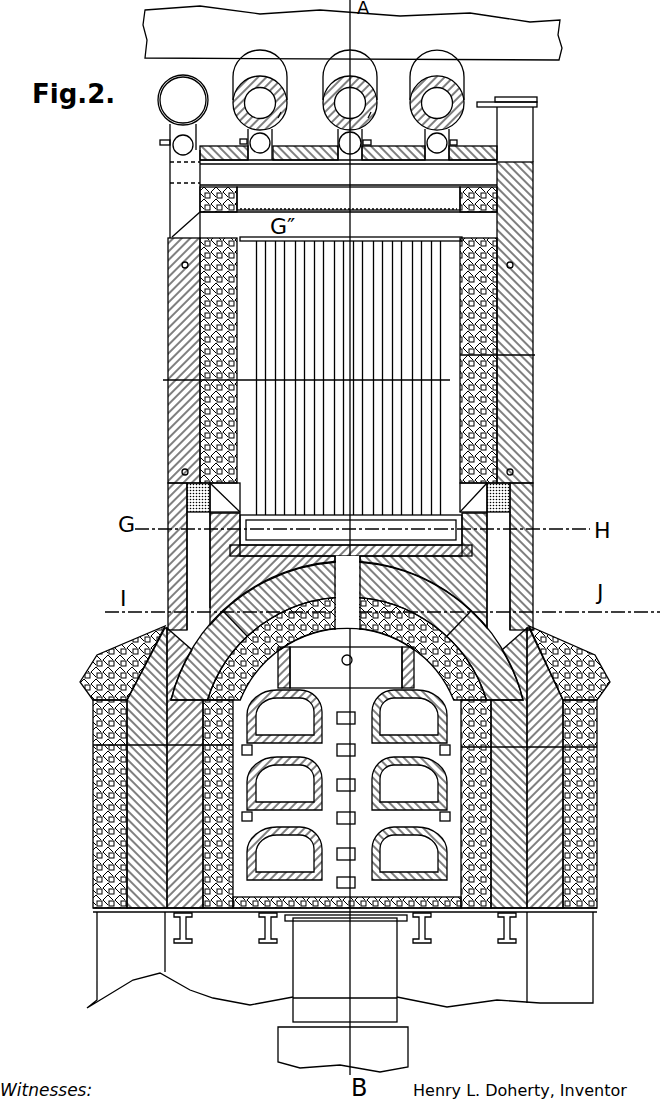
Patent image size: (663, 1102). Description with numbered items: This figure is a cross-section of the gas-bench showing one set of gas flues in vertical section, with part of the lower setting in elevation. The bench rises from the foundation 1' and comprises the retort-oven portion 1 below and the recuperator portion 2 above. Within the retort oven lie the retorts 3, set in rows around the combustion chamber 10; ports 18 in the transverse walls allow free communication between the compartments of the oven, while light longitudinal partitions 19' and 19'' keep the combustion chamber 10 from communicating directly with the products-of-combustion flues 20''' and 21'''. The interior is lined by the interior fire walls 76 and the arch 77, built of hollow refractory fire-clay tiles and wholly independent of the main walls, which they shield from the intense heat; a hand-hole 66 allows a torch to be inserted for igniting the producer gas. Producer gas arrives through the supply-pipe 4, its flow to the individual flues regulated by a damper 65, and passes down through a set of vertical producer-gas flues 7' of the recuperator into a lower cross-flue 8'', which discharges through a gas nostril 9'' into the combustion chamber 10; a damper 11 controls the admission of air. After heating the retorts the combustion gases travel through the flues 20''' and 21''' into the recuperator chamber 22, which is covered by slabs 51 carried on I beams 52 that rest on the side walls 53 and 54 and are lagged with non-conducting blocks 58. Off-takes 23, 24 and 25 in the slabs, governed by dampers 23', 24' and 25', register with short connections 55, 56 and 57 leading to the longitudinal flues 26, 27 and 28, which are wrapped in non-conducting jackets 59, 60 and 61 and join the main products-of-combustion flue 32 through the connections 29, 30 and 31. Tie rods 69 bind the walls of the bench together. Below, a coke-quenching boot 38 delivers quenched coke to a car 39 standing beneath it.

The retort-oven portion 1 is at (345, 840).
The foundation 1' is at (340, 960).
The recuperator portion 2 is at (200, 283).
The retorts 3 is at (347, 785).
The producer-gas supply-pipe 4 is at (183, 100).
The vertical producer gas flue set 7' is at (351, 376).
The lower cross-flue 8'' is at (351, 535).
The gas nostril 9'' is at (349, 593).
The combustion chamber 10 is at (346, 667).
The damper 11 is at (510, 101).
The ports 18 is at (439, 749).
The longitudinal partition 19' is at (298, 667).
The longitudinal partition 19'' is at (397, 667).
The products-of-combustion flue 20''' is at (230, 629).
The products-of-combustion flue 21''' is at (468, 632).
The recuperator chamber 22 is at (348, 370).
The off-take 23 is at (235, 189).
The damper 23' is at (260, 144).
The off-take 24 is at (348, 188).
The damper 24' is at (366, 144).
The off-take 25 is at (462, 189).
The damper 25' is at (437, 144).
The longitudinal flue 26 is at (260, 103).
The longitudinal flue 27 is at (350, 103).
The longitudinal flue 28 is at (437, 103).
The connection 29 is at (260, 75).
The connection 30 is at (350, 75).
The connection 31 is at (437, 75).
The main products-of-combustion flue 32 is at (352, 33).
The coke-quenching boot 38 is at (346, 968).
The car 39 is at (343, 1049).
The plates or slabs 51 is at (348, 176).
The I beams 52 is at (348, 175).
The side wall 53 is at (198, 280).
The side wall 54 is at (500, 286).
The short connection 55 is at (245, 139).
The short connection 56 is at (366, 136).
The short connection 57 is at (452, 136).
The non-conducting blocks 58 is at (348, 145).
The non-conducting jacket 59 is at (283, 110).
The non-conducting jacket 60 is at (373, 112).
The non-conducting jacket 61 is at (481, 101).
The damper 65 is at (180, 181).
The hand-hole 66 is at (357, 654).
The tie rods 69 is at (183, 264).
The interior fire walls 76 is at (306, 819).
The arch 77 is at (377, 636).